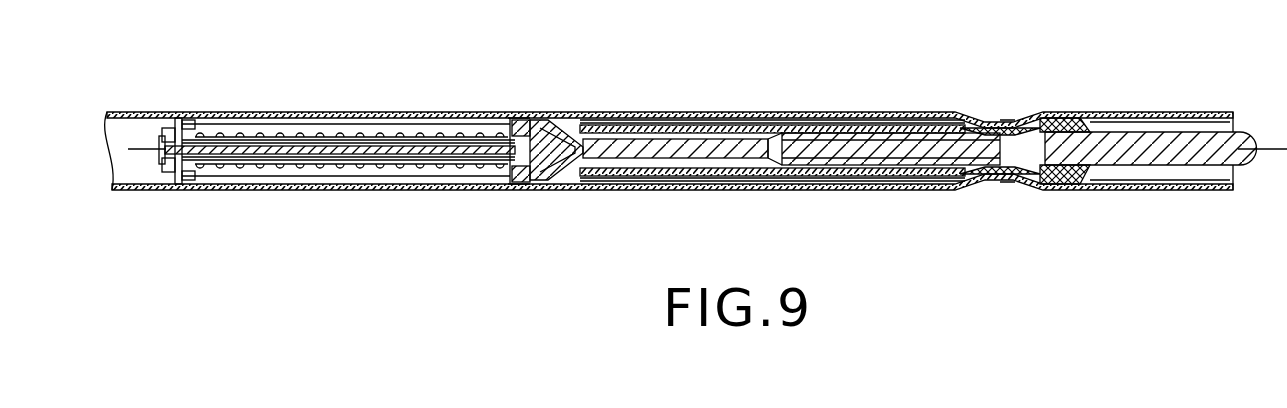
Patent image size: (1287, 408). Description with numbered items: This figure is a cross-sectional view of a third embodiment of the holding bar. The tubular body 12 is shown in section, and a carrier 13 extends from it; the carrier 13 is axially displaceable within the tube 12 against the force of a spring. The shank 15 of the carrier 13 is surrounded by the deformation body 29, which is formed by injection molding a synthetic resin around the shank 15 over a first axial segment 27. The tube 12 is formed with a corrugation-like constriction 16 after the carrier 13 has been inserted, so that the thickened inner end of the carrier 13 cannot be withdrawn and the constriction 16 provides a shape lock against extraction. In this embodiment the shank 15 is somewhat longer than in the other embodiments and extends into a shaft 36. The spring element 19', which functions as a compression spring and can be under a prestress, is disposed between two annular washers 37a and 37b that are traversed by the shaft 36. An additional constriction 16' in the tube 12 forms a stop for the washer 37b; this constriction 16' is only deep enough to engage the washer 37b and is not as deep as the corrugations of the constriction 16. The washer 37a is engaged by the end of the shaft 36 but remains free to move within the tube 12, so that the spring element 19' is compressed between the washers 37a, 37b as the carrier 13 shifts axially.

The tubular body 12 is at (382, 112).
The carrier 13 is at (1238, 135).
The shank 15 is at (881, 133).
The constriction 16 is at (1000, 151).
The additional constriction 16' is at (531, 153).
The spring element 19' is at (348, 106).
The first axial segment 27 is at (648, 125).
The deformation body 29 is at (701, 139).
The shaft 36 is at (377, 155).
The annular washer 37a is at (183, 118).
The annular washer 37b is at (516, 118).